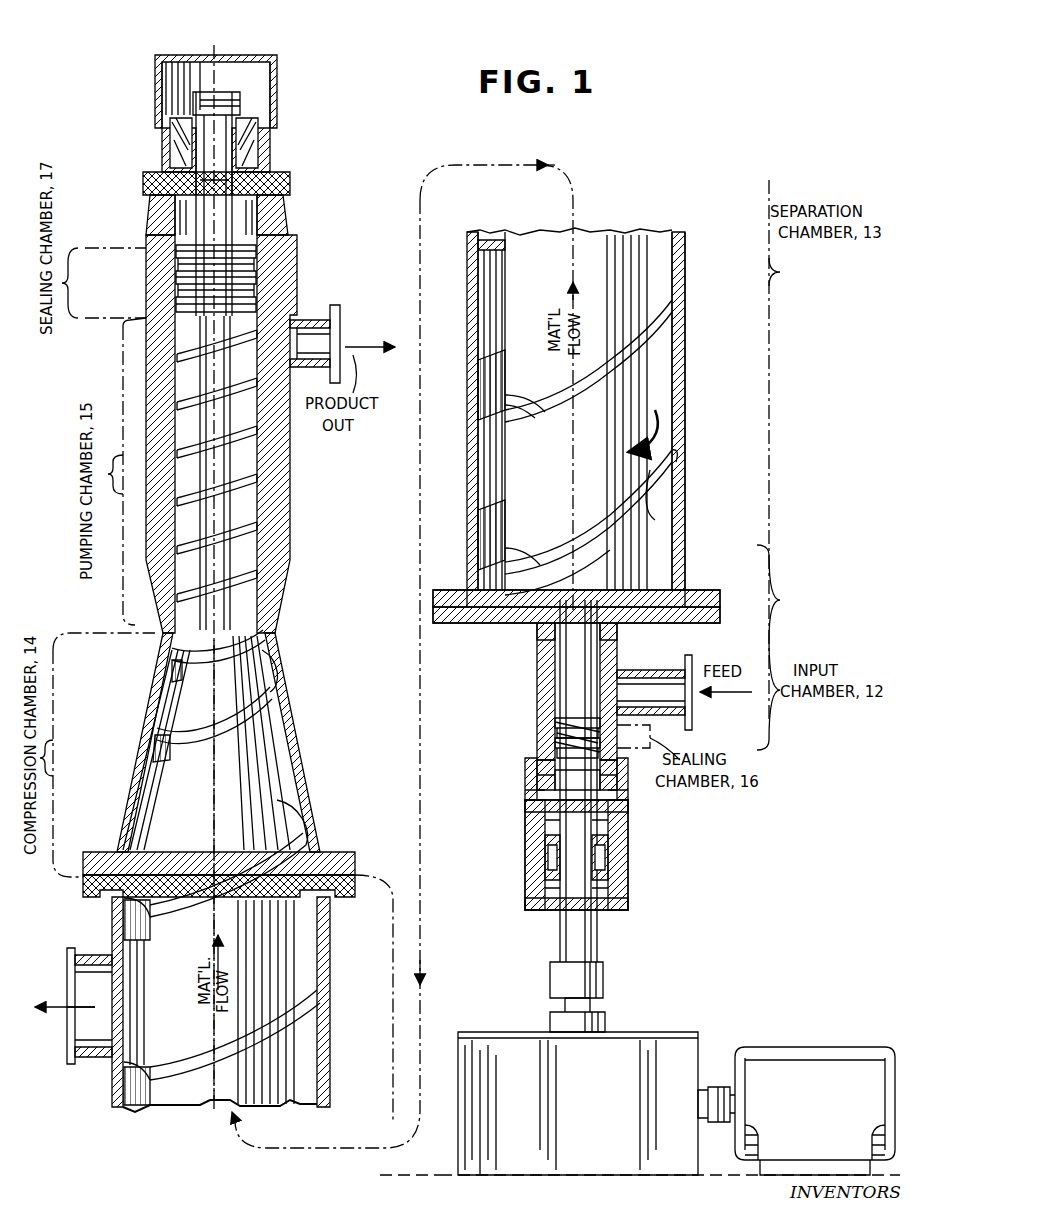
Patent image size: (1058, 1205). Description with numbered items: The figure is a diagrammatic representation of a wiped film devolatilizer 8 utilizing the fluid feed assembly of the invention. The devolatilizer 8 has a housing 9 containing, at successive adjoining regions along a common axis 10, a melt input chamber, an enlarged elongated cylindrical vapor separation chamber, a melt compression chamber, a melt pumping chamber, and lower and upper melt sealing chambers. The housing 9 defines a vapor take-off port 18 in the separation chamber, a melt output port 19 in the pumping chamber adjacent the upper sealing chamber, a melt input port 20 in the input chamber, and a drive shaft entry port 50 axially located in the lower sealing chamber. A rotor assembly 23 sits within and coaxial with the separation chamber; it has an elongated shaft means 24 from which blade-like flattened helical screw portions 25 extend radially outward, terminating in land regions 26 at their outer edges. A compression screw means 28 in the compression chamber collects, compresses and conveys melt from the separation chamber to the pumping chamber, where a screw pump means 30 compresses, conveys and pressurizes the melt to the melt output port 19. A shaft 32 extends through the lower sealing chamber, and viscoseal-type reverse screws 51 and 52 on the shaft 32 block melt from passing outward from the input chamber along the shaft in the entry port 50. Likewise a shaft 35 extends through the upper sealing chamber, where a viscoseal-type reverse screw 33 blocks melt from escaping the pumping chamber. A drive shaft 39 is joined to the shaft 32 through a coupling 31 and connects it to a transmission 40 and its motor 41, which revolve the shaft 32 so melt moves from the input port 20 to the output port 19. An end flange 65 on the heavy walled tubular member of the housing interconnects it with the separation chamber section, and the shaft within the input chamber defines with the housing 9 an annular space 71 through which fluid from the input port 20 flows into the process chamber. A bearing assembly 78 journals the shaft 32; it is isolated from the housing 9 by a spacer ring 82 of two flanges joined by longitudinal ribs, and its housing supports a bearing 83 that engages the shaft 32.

The wiped film devolatilizer 8 is at (300, 272).
The housing 9 is at (322, 1031).
The common axis 10 is at (218, 1062).
The vapor take-off port 18 is at (88, 1029).
The melt output port 19 is at (337, 335).
The melt input port 20 is at (680, 679).
The rotor assembly 23 is at (535, 482).
The elongated shaft means 24 is at (510, 523).
The flattened helical screw portions 25 is at (655, 489).
The land regions 26 is at (655, 521).
The compression screw means 28 is at (190, 792).
The screw pump means 30 is at (248, 521).
The coupling 31 is at (570, 981).
The shaft 32 is at (566, 947).
The viscoseal-type reverse screw 33 is at (190, 291).
The shaft 35 is at (200, 214).
The drive shaft 39 is at (565, 1004).
The transmission 40 is at (630, 1044).
The motor 41 is at (790, 1062).
The drive shaft entry port 50 is at (610, 761).
The viscoseal-type reverse screw 51 is at (568, 721).
The viscoseal-type reverse screw 52 is at (548, 739).
The end flange 65 is at (505, 614).
The annular space 71 is at (598, 649).
The bearing assembly 78 is at (632, 865).
The spacer ring 82 is at (525, 807).
The bearing 83 is at (546, 859).